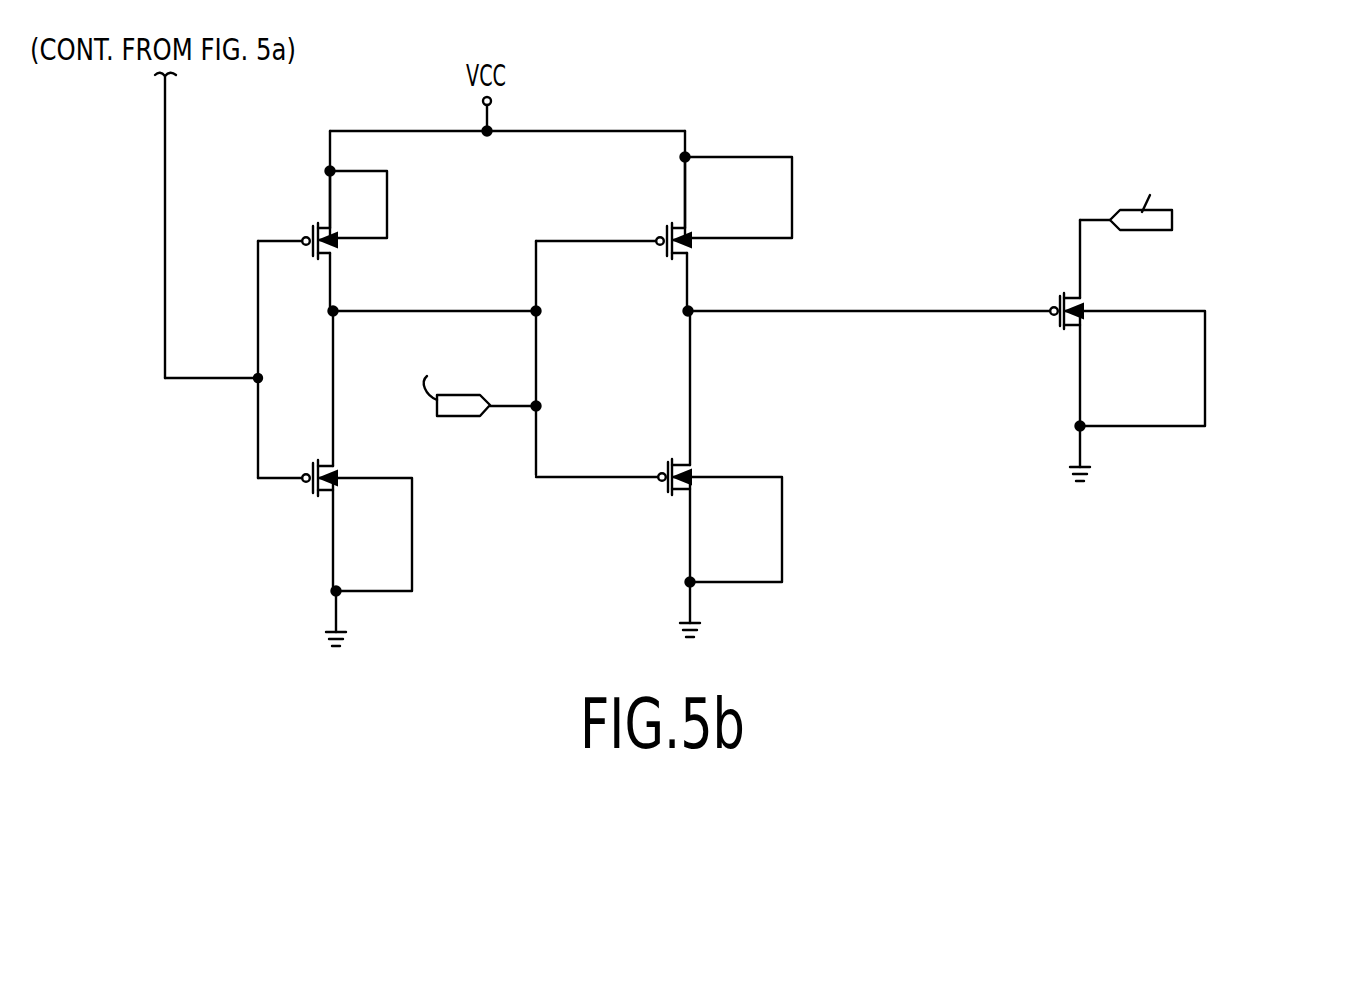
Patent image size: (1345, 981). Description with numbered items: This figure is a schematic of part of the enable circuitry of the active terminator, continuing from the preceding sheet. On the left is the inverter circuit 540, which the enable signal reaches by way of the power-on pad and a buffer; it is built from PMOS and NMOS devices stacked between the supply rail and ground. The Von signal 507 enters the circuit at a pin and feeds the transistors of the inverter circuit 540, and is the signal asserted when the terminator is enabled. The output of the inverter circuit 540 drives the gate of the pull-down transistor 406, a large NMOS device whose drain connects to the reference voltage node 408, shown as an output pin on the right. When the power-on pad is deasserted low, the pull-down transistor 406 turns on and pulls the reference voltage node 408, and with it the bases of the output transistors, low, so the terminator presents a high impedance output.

The inverter circuit 540 is at (242, 546).
The Von signal 507 is at (464, 416).
The pull-down transistor 406 is at (1185, 432).
The reference voltage node 408 is at (1172, 220).